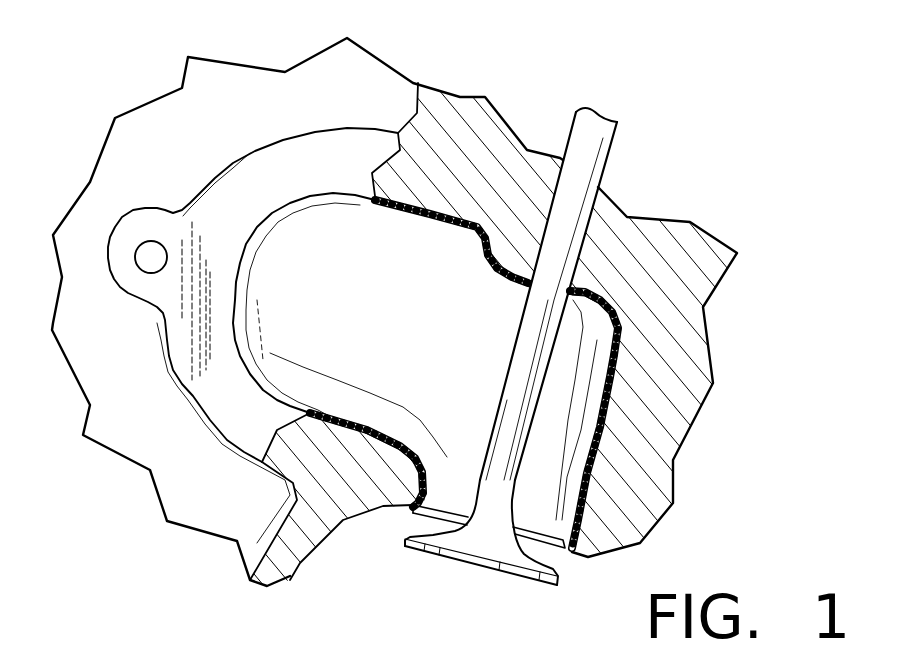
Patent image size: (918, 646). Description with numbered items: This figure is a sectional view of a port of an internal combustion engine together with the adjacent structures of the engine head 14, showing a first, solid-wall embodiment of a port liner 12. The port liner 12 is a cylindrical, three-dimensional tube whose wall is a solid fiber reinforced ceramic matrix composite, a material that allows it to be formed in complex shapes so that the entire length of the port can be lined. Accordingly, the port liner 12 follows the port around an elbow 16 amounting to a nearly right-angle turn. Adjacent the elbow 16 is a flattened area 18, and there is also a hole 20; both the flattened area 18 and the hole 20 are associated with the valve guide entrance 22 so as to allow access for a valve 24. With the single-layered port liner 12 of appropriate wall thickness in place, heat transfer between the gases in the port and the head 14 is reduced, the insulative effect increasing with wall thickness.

The port liner 12 is at (403, 216).
The head 14 is at (363, 70).
The elbow 16 is at (633, 321).
The flattened area 18 is at (590, 285).
The hole 20 is at (524, 290).
The valve guide entrance 22 is at (605, 180).
The valve 24 is at (505, 387).